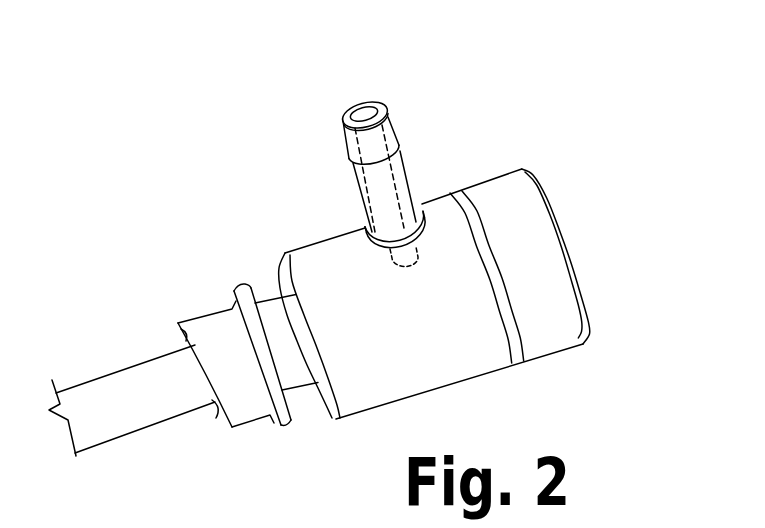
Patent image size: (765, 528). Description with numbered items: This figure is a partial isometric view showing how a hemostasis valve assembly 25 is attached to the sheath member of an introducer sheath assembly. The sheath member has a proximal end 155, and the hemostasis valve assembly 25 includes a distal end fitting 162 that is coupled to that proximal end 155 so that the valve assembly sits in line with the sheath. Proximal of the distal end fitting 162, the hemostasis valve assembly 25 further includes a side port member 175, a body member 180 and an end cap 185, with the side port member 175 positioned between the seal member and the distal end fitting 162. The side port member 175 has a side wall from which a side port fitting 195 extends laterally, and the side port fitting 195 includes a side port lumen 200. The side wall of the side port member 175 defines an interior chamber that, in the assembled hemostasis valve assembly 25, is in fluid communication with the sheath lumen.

The hemostasis valve assembly 25 is at (555, 99).
The proximal end 155 is at (102, 377).
The distal end fitting 162 is at (203, 317).
The side port member 175 is at (343, 227).
The body member 180 is at (333, 417).
The end cap 185 is at (588, 333).
The side port fitting 195 is at (401, 131).
The side port lumen 200 is at (358, 113).